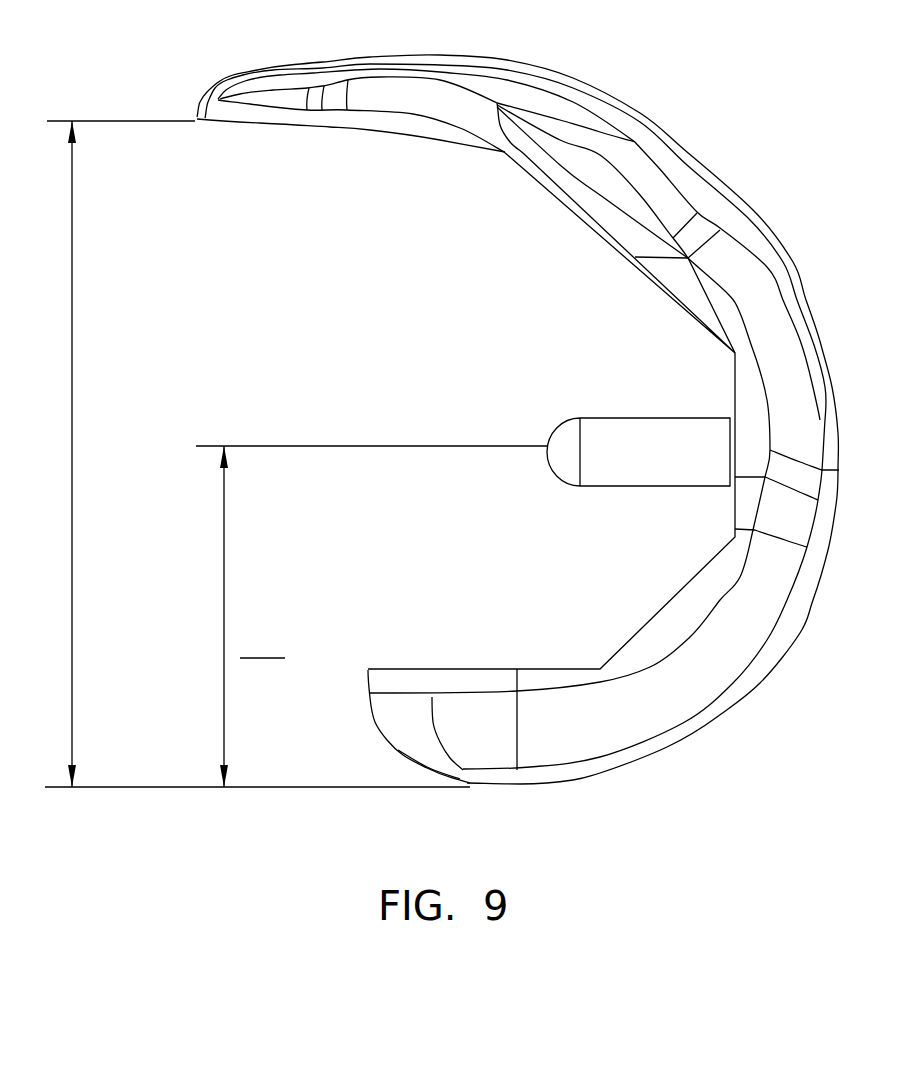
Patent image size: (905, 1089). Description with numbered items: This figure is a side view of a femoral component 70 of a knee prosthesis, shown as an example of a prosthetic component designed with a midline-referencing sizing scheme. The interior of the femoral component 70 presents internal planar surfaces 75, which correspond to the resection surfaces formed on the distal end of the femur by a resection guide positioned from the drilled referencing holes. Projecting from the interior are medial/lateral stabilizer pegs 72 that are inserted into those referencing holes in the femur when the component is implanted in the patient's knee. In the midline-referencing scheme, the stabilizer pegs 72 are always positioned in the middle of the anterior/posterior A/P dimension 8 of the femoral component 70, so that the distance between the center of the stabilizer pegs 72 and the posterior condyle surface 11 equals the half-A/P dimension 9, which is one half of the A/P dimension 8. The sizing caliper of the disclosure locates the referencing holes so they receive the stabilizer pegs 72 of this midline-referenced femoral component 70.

The femoral component 70 is at (652, 106).
The internal planar surfaces 75 is at (393, 142).
The medial/lateral stabilizer pegs 72 is at (640, 423).
The posterior condyle surface 11 is at (542, 792).
The A/P dimension 8 is at (73, 353).
The (A/P)/2 dimension 9 is at (223, 540).